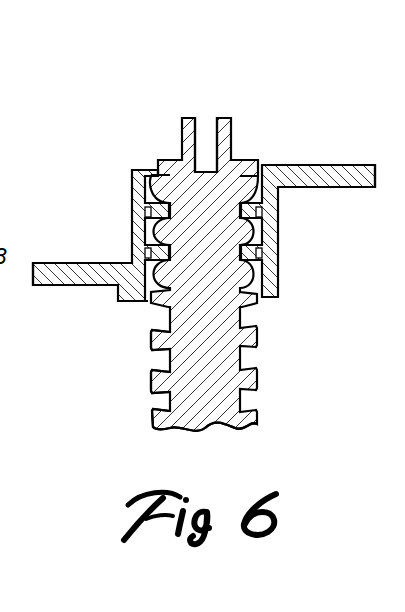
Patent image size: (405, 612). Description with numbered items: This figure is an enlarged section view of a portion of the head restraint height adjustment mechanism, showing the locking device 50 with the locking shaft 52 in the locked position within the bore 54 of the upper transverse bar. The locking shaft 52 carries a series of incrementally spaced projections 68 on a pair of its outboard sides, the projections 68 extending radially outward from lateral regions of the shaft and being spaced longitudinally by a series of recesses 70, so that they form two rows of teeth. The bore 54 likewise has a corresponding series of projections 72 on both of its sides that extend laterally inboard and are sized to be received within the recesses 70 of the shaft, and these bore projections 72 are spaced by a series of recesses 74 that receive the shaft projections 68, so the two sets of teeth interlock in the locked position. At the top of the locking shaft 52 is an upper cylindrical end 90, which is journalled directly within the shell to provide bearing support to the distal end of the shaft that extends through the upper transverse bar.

The locking device 50 is at (209, 237).
The locking shaft 52 is at (224, 112).
The bore 54 is at (262, 165).
The projections 68 is at (150, 337).
The recesses 70 is at (152, 407).
The projections 72 is at (158, 173).
The recesses 74 is at (166, 267).
The upper cylindrical end 90 is at (188, 117).